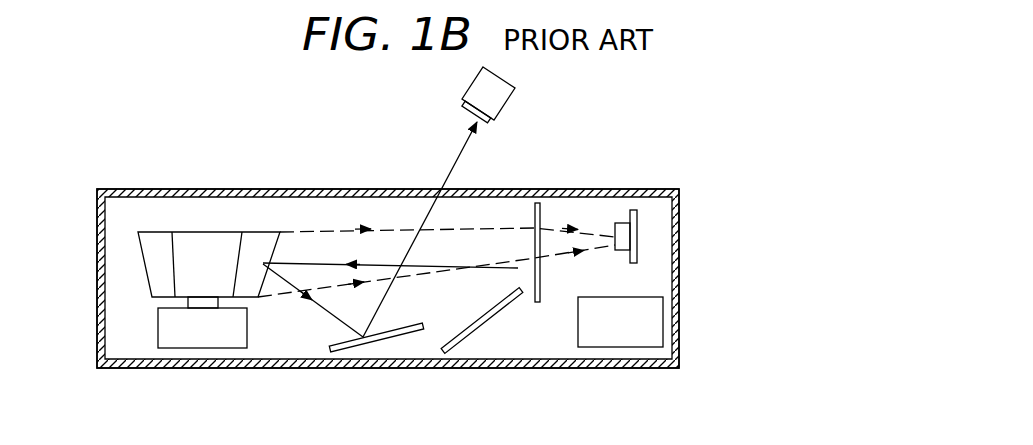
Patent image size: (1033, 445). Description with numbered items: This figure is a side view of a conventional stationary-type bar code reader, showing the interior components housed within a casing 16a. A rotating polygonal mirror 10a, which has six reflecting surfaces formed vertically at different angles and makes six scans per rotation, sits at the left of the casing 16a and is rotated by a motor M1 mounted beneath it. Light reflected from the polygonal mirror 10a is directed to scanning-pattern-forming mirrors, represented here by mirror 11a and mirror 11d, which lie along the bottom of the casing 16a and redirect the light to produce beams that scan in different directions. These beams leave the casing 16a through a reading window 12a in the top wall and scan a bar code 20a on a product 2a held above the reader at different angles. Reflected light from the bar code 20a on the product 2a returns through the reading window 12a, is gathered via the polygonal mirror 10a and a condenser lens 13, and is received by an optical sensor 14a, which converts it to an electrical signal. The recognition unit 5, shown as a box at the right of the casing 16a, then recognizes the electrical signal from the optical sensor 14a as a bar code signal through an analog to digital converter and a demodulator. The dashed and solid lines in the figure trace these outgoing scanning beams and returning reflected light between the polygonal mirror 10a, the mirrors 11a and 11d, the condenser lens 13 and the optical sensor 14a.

The casing 16a is at (148, 188).
The reading window 12a is at (482, 188).
The polygonal mirror 10a is at (213, 240).
The motor M1 is at (185, 342).
The bar code 20a is at (470, 118).
The product 2a is at (503, 95).
The scanning-pattern-forming mirror 11a is at (350, 350).
The scanning-pattern-forming mirror 11d is at (492, 318).
The condenser lens 13 is at (540, 275).
The optical sensor 14a is at (627, 238).
The recognition unit 5 is at (655, 335).